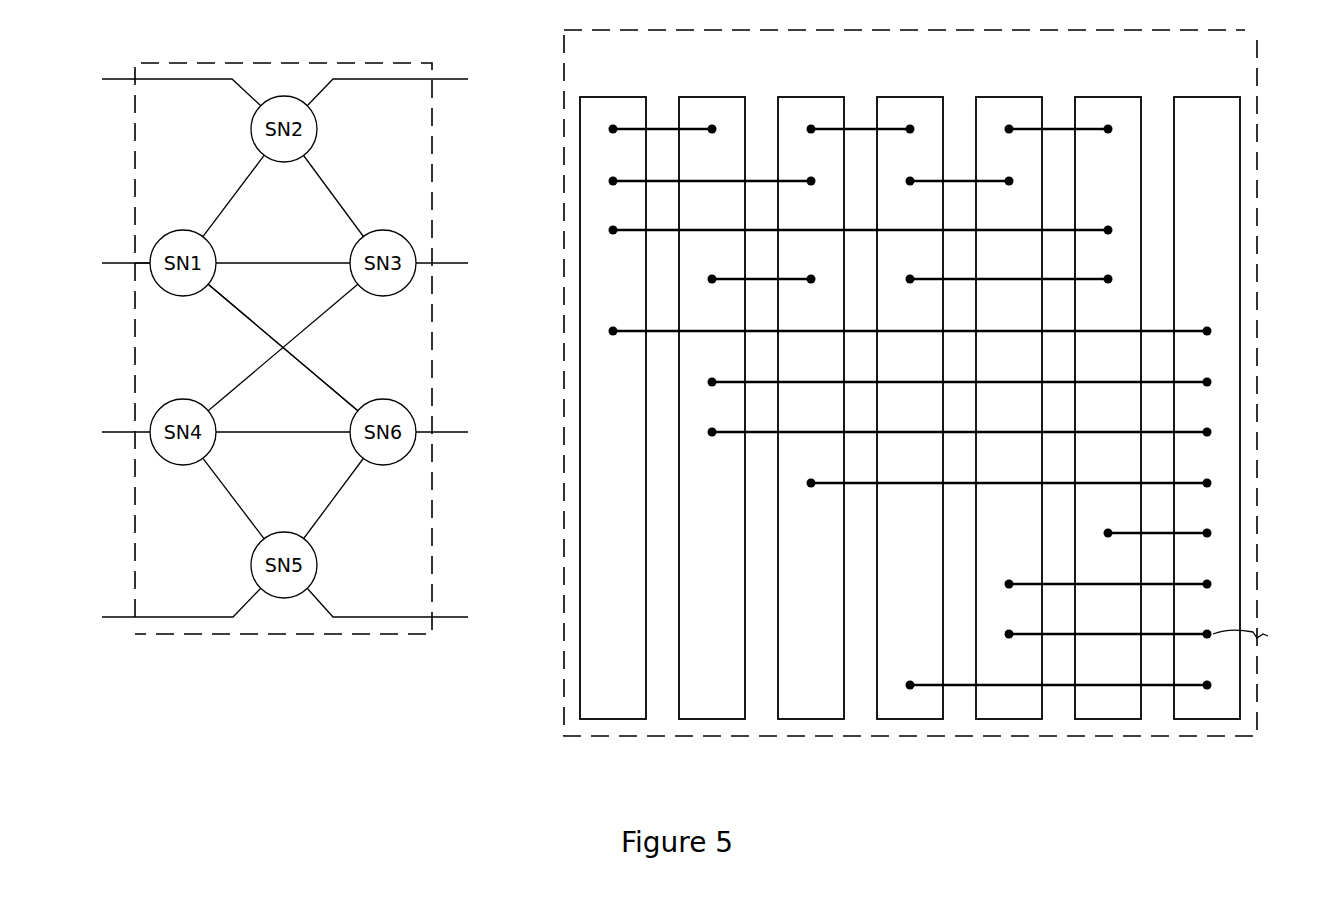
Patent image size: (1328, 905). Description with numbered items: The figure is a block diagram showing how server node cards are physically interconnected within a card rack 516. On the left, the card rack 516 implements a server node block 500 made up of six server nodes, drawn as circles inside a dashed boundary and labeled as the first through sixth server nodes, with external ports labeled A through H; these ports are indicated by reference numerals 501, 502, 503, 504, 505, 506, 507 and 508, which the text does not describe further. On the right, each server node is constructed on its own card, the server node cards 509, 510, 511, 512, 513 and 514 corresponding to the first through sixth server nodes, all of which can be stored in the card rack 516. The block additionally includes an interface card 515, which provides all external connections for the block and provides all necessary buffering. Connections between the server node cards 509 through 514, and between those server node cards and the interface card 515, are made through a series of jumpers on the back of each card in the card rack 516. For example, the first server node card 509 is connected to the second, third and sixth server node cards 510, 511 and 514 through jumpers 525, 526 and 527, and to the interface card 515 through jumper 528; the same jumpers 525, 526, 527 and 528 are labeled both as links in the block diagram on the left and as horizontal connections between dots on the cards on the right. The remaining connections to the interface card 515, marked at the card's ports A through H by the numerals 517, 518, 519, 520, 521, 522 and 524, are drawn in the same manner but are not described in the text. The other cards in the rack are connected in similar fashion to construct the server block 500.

The server node block 500 is at (320, 620).
The port A 501 is at (67, 308).
The port B 502 is at (67, 125).
The port C 503 is at (463, 125).
The port D 504 is at (463, 308).
The port E 505 is at (463, 480).
The port F 506 is at (463, 665).
The port G 507 is at (67, 665).
The port H 508 is at (67, 480).
The server node card 509 is at (611, 703).
The server node card 510 is at (710, 703).
The server node card 511 is at (809, 703).
The server node card 512 is at (908, 703).
The server node card 513 is at (1007, 703).
The server node card 514 is at (1106, 703).
The interface card 515 is at (1205, 703).
The card rack 516 is at (1245, 727).
The interface connection A 517 is at (1213, 331).
The interface connection B 518 is at (1213, 382).
The interface connection C 519 is at (1213, 432).
The interface connection D 520 is at (1213, 483).
The interface connection E 521 is at (1213, 533).
The interface connection F 522 is at (1213, 584).
The interface connection H 524 is at (1213, 685).
The jumper 525 is at (183, 193).
The jumper 526 is at (266, 250).
The jumper 527 is at (183, 343).
The jumper 528 is at (67, 243).